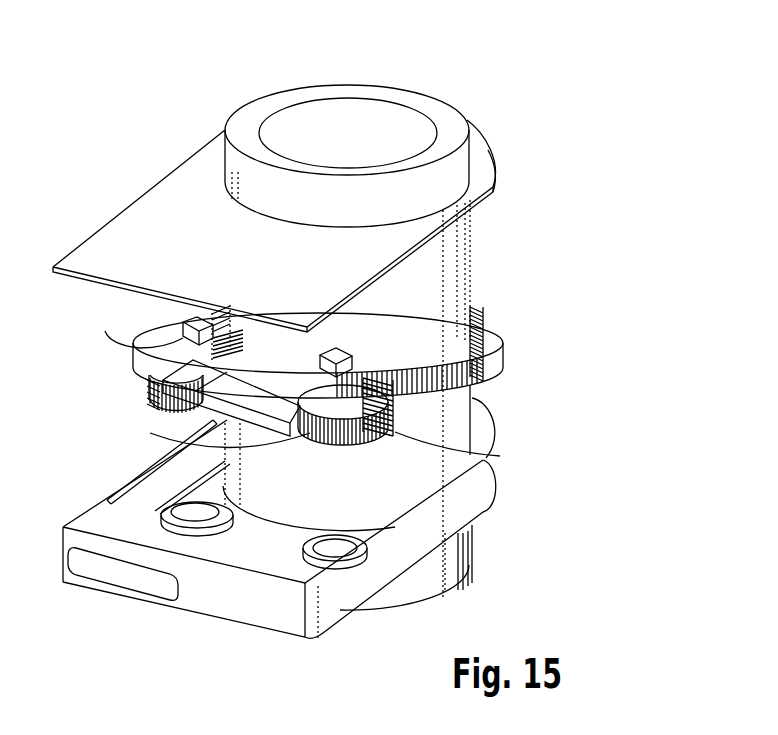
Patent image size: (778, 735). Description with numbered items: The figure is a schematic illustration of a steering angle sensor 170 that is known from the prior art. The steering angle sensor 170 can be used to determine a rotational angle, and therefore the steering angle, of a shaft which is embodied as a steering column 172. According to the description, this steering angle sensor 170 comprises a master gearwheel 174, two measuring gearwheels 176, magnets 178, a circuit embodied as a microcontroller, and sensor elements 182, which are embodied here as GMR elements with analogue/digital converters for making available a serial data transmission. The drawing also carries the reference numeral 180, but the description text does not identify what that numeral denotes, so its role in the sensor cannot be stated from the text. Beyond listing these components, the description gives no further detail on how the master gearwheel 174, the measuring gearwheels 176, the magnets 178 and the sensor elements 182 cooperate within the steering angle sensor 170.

The steering angle sensor 170 is at (563, 164).
The steering column 172 is at (437, 106).
The master gearwheel 174 is at (506, 343).
The measuring gearwheel 176 is at (205, 403).
The magnets 178 is at (152, 296).
The ring gear 180 is at (390, 433).
The sensor elements 182 is at (143, 372).